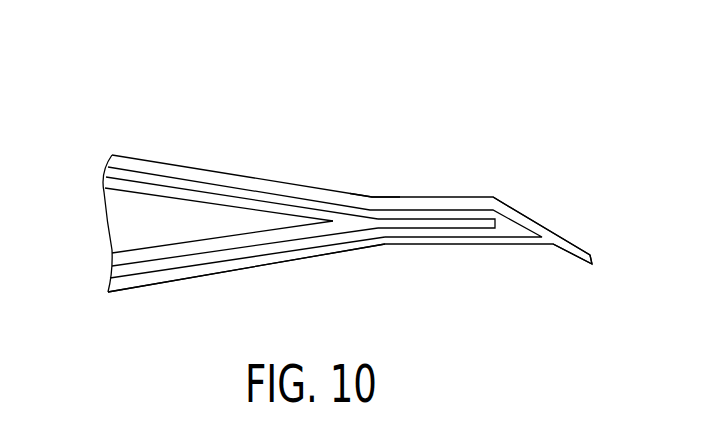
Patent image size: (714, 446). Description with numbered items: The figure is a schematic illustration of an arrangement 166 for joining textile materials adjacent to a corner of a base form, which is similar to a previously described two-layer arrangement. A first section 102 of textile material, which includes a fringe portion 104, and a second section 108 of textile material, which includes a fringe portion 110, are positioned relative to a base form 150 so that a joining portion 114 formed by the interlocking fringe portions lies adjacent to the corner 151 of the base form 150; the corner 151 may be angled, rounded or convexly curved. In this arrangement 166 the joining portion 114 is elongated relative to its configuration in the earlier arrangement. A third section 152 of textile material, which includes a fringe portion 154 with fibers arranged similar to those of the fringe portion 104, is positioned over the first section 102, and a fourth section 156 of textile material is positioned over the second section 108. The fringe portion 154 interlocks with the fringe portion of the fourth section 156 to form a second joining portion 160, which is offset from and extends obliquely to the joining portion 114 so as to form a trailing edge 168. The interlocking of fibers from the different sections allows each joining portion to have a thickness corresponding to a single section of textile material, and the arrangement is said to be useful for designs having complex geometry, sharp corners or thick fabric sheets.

The arrangement 166 is at (44, 105).
The first section 102 is at (190, 189).
The third section 152 is at (374, 199).
The fringe portion 104 is at (436, 198).
The joining portion 114 is at (450, 210).
The fringe portion 154 is at (566, 220).
The second joining portion 160 is at (576, 239).
The trailing edge 168 is at (597, 277).
The base form 150 is at (112, 223).
The corner 151 is at (297, 224).
The second section 108 is at (160, 256).
The fourth section 156 is at (202, 264).
The fringe portion 110 is at (388, 252).